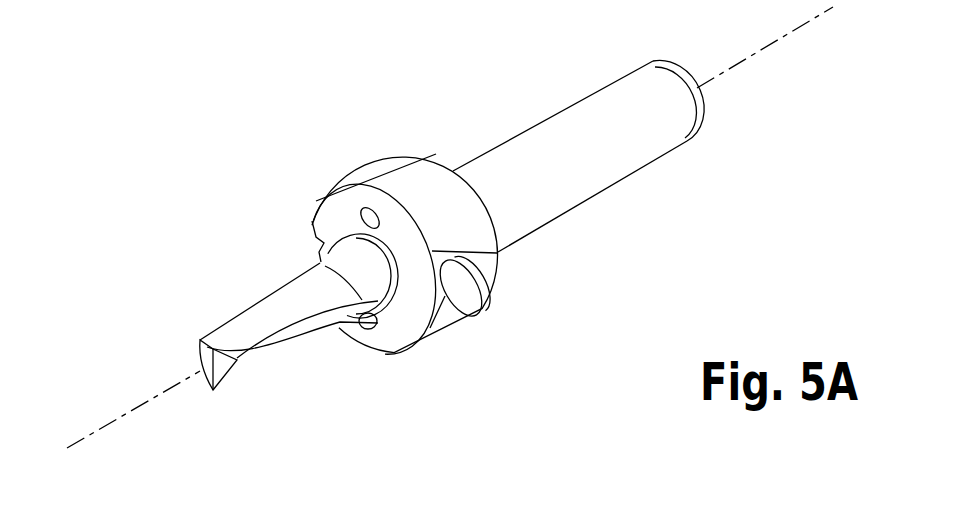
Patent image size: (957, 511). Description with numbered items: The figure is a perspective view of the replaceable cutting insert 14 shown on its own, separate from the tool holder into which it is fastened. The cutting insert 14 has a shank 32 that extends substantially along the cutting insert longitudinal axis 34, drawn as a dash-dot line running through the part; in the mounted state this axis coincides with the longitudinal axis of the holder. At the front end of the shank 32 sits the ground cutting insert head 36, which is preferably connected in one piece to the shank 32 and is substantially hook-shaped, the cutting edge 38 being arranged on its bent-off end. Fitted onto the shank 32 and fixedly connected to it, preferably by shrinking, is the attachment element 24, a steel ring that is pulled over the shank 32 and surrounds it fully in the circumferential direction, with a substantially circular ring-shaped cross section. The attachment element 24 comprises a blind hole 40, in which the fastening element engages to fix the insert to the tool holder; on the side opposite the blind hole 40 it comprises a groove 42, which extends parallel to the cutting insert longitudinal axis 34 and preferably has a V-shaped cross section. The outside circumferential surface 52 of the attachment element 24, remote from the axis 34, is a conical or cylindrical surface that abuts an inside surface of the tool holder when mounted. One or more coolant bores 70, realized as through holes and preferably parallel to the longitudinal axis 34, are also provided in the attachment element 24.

The cutting insert 14 is at (216, 102).
The attachment element 24 is at (395, 182).
The shank 32 is at (543, 150).
The cutting insert longitudinal axis 34 is at (773, 42).
The cutting insert head 36 is at (273, 307).
The cutting edge 38 is at (227, 377).
The blind hole 40 is at (460, 282).
The groove 42 is at (313, 248).
The outside circumferential surface 52 is at (433, 197).
The coolant bores 70 is at (365, 207).